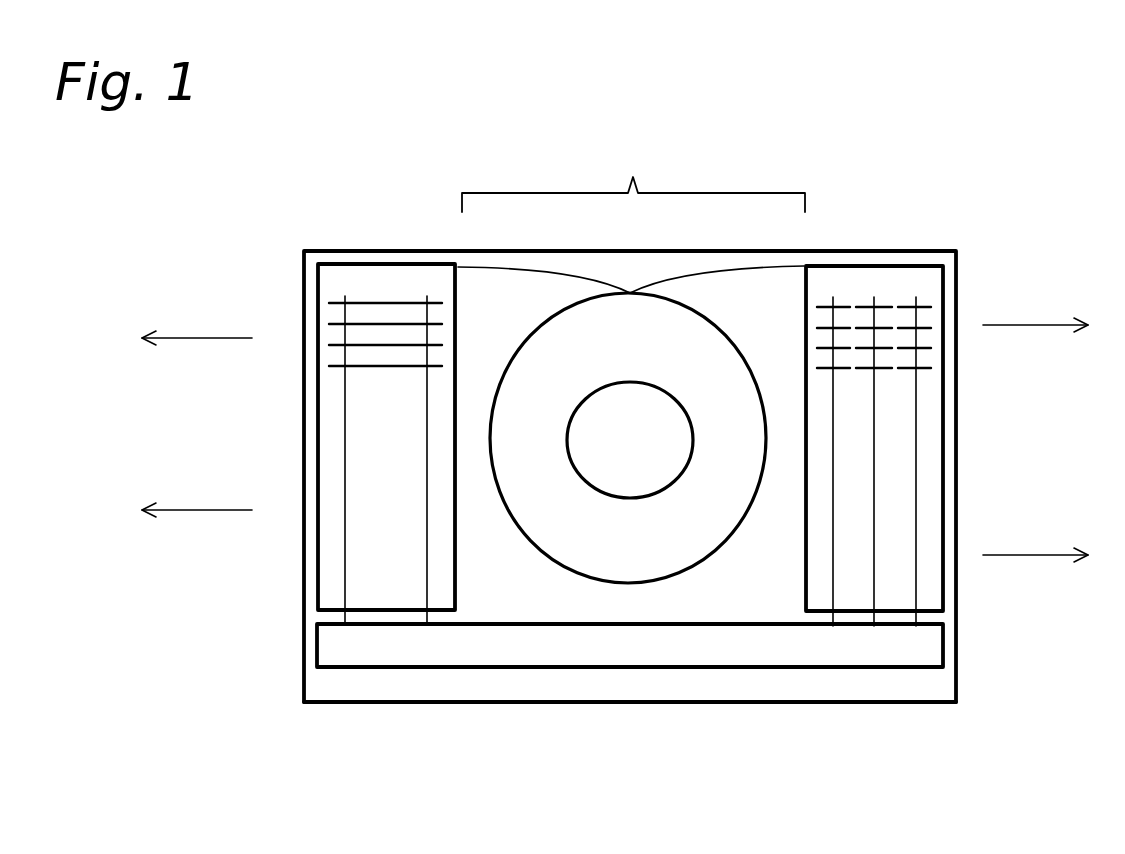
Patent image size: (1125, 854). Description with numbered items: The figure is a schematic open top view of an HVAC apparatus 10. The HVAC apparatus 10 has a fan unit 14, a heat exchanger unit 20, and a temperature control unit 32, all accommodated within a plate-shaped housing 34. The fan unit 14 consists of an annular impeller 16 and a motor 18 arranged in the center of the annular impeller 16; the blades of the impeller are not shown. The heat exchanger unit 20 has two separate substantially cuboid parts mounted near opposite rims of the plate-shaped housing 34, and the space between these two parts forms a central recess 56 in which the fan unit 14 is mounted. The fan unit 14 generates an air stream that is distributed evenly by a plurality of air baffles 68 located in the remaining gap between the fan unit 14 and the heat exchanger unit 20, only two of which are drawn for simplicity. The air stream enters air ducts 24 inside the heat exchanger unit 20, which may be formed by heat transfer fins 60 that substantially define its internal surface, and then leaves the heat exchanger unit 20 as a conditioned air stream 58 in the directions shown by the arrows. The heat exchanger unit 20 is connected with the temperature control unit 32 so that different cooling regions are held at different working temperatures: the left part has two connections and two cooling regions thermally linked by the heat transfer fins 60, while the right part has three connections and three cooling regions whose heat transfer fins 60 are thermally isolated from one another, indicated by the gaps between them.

The HVAC apparatus 10 is at (227, 793).
The fan unit 14 is at (713, 554).
The annular impeller 16 is at (570, 537).
The motor 18 is at (642, 470).
The heat exchanger unit 20 is at (458, 556).
The air ducts 24 is at (383, 357).
The temperature control unit 32 is at (642, 662).
The plate-shaped housing 34 is at (430, 703).
The central recess 56 is at (633, 169).
The conditioned air stream 58 is at (192, 336).
The heat transfer fins 60 is at (372, 300).
The air baffles 68 is at (548, 277).